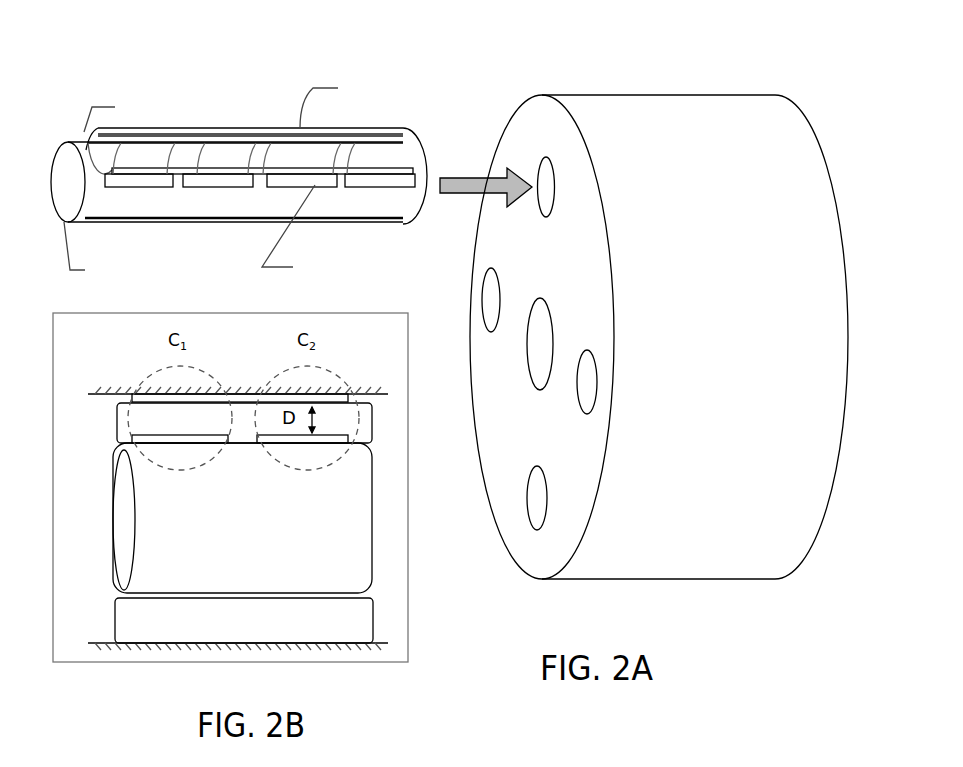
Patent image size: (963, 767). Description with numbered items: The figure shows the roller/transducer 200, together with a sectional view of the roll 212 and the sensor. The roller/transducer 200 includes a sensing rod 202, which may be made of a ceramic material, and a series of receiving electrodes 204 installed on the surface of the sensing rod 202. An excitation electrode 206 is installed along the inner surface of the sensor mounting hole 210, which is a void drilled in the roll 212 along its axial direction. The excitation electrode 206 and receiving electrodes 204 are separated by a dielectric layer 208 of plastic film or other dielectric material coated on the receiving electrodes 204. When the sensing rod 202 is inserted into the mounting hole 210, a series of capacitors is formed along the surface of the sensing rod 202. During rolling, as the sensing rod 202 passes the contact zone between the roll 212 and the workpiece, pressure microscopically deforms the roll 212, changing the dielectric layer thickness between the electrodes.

In FIG. 2A, the roller/transducer 200 is at (635, 307).
In FIG. 2A, the sensing rod 202 is at (60, 180).
In FIG. 2B, the sensing rod 202 is at (145, 522).
In FIG. 2A, the receiving electrodes 204 is at (325, 183).
In FIG. 2B, the receiving electrodes 204 is at (173, 442).
In FIG. 2A, the excitation electrode 206 is at (293, 128).
In FIG. 2B, the excitation electrode 206 is at (262, 400).
In FIG. 2A, the dielectric layer 208 is at (80, 143).
In FIG. 2B, the dielectric layer 208 is at (163, 420).
In FIG. 2A, the sensor mounting hole 210 is at (543, 175).
In FIG. 2A, the roll 212 is at (668, 107).
In FIG. 2B, the roll 212 is at (103, 392).